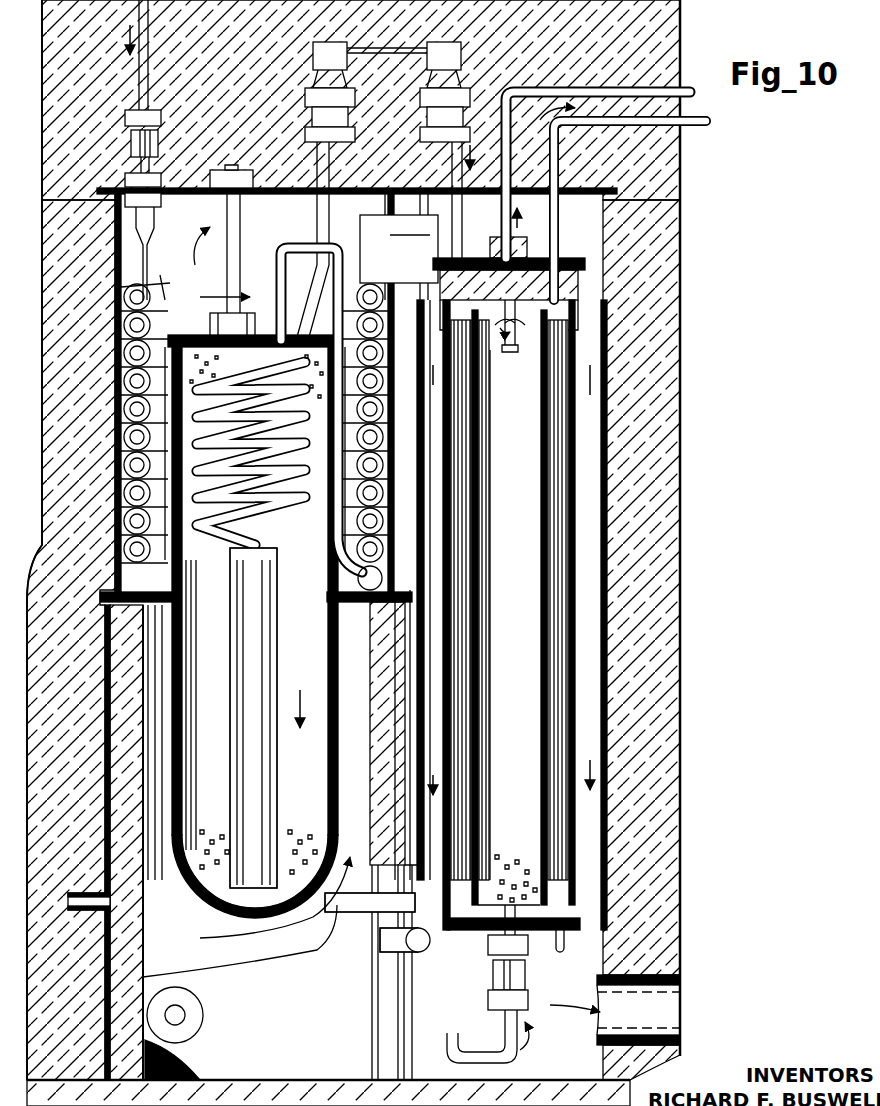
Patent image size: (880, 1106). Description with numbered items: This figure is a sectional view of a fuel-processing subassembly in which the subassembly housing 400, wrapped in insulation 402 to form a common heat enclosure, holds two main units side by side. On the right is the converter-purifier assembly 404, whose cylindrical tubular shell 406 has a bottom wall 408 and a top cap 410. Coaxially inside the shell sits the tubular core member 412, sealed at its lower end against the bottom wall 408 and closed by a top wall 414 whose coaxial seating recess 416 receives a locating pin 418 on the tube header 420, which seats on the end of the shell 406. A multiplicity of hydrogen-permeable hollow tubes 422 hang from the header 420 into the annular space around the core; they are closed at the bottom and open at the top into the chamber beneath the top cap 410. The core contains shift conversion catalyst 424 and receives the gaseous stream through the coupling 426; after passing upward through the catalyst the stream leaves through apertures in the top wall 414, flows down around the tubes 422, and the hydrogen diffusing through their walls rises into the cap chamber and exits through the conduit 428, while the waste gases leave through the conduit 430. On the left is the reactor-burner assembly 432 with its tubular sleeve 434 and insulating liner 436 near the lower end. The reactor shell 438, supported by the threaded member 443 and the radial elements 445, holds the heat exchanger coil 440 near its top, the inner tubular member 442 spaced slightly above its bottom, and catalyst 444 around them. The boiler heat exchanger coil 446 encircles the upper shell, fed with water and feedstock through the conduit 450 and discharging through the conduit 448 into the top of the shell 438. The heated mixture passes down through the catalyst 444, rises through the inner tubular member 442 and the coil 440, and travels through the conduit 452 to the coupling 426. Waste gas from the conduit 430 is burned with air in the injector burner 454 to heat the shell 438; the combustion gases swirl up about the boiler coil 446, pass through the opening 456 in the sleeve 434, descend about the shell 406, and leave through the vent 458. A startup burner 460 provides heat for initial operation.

The subassembly housing 400 is at (576, 555).
The insulation 402 is at (683, 700).
The converter-purifier assembly 404 is at (583, 788).
The tubular shell 406 is at (578, 852).
The bottom wall 408 is at (533, 943).
The top cap 410 is at (560, 262).
The tubular core member 412 is at (540, 750).
The top wall 414 is at (500, 345).
The seating recess 416 is at (490, 350).
The locating pin 418 is at (503, 337).
The tube header 420 is at (588, 264).
The hollow tubes 422 is at (585, 600).
The shift conversion catalyst 424 is at (530, 863).
The coupling 426 is at (540, 960).
The conduit 428 is at (549, 60).
The conduit 430 is at (695, 128).
The reactor-burner assembly 432 is at (100, 1013).
The tubular sleeve 434 is at (105, 782).
The insulating liner 436 is at (105, 855).
The reactor shell 438 is at (173, 718).
The heat exchanger coil 440 is at (253, 503).
The inner tubular member 442 is at (267, 677).
The threaded member 443 is at (237, 245).
The catalyst 444 is at (165, 300).
The radial elements 445 is at (100, 623).
The heat exchanger coil 446 is at (122, 300).
The conduit 448 is at (335, 520).
The conduit 450 is at (145, 250).
The conduit 452 is at (320, 165).
The injector burner 454 is at (428, 965).
The opening 456 is at (378, 215).
The vent 458 is at (675, 1027).
The startup burner 460 is at (192, 1017).